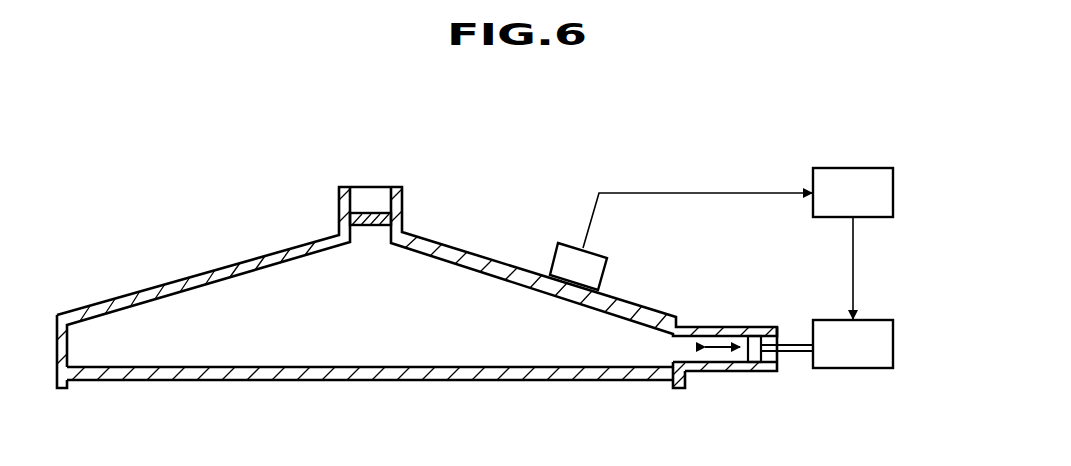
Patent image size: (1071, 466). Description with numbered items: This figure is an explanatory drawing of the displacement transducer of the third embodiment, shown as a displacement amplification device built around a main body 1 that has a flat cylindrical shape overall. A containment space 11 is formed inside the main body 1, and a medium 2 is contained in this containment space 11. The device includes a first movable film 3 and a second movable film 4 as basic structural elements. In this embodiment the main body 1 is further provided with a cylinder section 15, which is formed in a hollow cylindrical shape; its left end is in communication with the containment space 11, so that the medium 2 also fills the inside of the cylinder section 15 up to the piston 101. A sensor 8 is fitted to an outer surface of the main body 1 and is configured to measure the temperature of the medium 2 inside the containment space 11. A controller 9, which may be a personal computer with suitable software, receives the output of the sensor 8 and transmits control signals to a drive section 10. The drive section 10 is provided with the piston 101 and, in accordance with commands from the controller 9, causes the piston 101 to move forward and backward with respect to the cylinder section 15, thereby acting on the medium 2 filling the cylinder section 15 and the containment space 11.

The main body 1 is at (472, 258).
The medium 2 is at (296, 272).
The first movable film 3 is at (369, 213).
The second movable film 4 is at (158, 372).
The sensor 8 is at (567, 241).
The controller 9 is at (836, 168).
The drive section 10 is at (893, 330).
The containment space 11 is at (313, 355).
The cylinder section 15 is at (723, 364).
The piston 101 is at (767, 357).